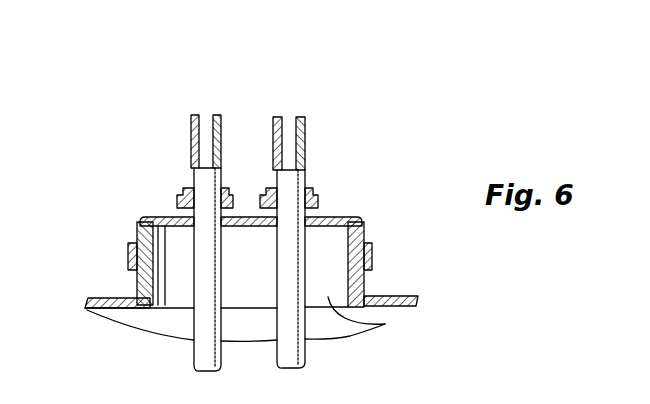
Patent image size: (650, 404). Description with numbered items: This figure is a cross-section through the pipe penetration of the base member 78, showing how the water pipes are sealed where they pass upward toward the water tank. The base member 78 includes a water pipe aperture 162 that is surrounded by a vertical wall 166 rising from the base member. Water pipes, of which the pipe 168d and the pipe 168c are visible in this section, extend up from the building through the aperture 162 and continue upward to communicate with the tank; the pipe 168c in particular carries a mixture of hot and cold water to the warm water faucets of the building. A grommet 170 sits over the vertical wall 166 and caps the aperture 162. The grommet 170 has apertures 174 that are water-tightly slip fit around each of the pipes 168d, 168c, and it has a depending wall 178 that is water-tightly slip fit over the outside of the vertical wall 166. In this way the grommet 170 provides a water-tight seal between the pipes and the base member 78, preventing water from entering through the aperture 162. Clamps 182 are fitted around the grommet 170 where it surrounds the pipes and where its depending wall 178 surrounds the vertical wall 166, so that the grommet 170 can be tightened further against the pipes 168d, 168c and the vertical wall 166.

The water pipe 168d is at (191, 122).
The water pipe 168c is at (342, 102).
The apertures 174 is at (200, 184).
The clamps 182 is at (317, 198).
The grommet 170 is at (153, 218).
The vertical wall 166 is at (355, 232).
The depending wall 178 is at (133, 279).
The base member 78 is at (412, 297).
The water pipe aperture 162 is at (385, 323).